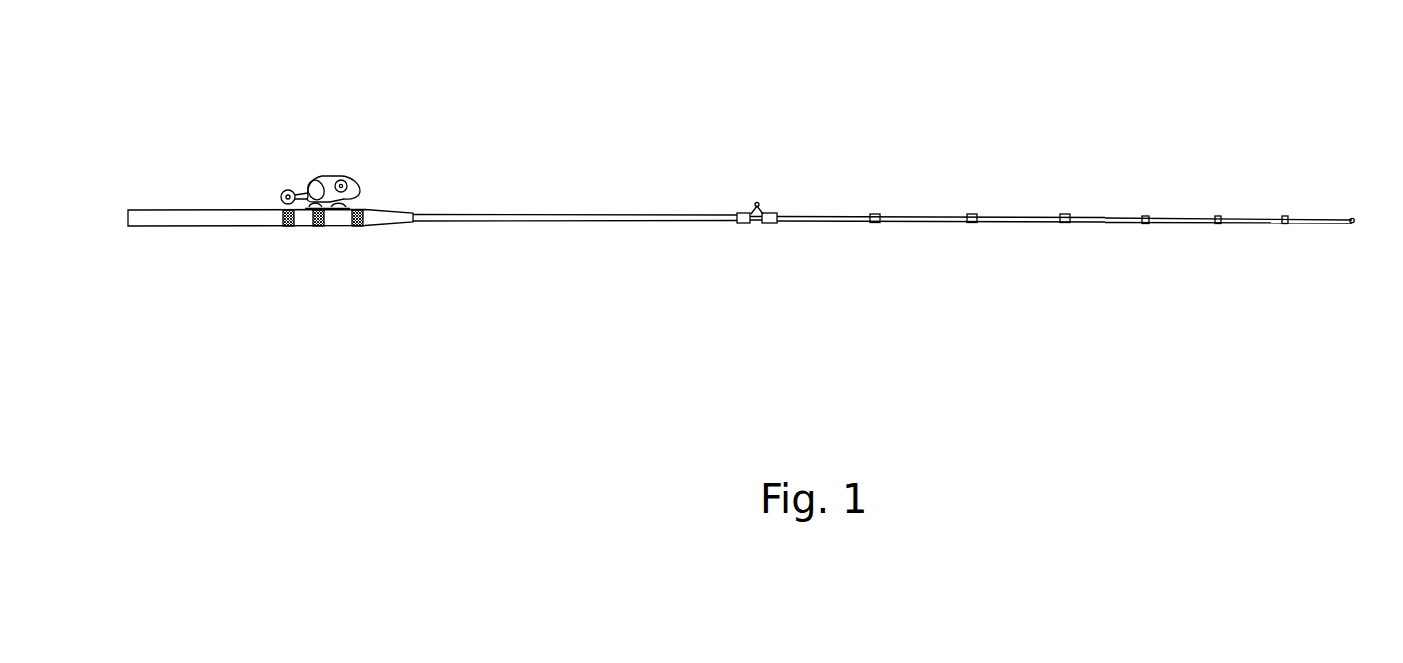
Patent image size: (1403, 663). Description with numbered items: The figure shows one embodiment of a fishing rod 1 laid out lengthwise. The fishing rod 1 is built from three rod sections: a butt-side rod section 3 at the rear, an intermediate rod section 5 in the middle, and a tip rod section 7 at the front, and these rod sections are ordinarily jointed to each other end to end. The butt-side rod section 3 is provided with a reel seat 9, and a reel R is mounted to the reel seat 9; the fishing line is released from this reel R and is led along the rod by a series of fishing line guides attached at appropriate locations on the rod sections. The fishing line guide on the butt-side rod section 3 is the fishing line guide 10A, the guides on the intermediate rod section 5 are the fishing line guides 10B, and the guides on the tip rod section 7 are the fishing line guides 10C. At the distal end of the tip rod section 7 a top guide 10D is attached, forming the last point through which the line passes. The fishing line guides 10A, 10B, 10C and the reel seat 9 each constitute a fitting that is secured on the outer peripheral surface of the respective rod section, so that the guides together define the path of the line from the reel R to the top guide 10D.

The fishing rod 1 is at (1082, 92).
The butt-side rod section 3 is at (510, 221).
The intermediate rod section 5 is at (915, 222).
The tip rod section 7 is at (1115, 222).
The reel seat 9 is at (366, 207).
The reel R is at (325, 177).
The fishing line guide 10A is at (757, 192).
The fishing line guide 10B is at (881, 212).
The fishing line guide 10C is at (1149, 215).
The top guide 10D is at (1352, 218).